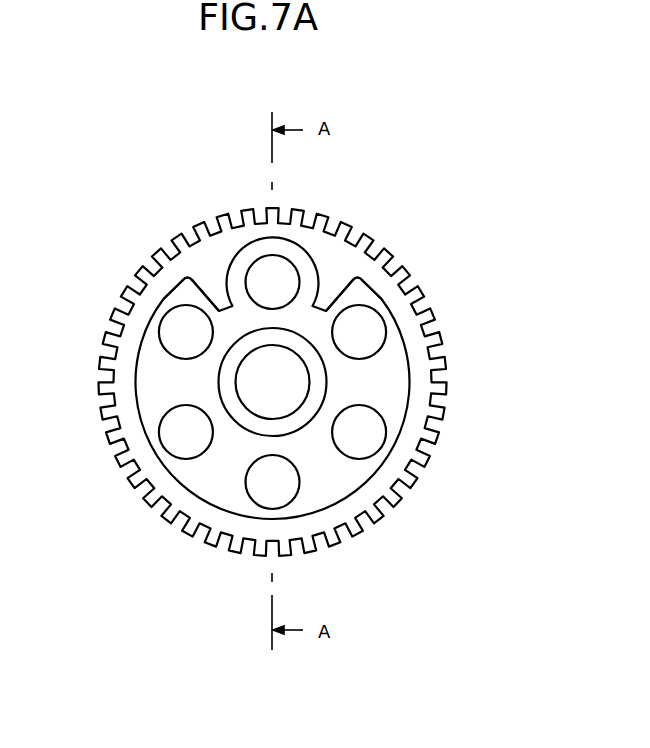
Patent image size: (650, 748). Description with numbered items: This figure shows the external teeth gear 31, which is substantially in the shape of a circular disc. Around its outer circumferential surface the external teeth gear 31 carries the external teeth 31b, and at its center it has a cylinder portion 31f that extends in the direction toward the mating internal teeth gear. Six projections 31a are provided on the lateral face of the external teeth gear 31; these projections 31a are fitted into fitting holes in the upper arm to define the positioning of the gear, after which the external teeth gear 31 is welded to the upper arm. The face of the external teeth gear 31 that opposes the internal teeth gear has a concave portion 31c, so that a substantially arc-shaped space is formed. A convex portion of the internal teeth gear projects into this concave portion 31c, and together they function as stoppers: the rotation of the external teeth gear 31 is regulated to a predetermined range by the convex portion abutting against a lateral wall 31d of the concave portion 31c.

The external teeth gear 31 is at (413, 256).
The projection 31a is at (285, 493).
The external teeth 31b is at (441, 350).
The concave portion 31c is at (333, 477).
The lateral wall 31d is at (200, 292).
The cylinder portion 31f is at (326, 382).